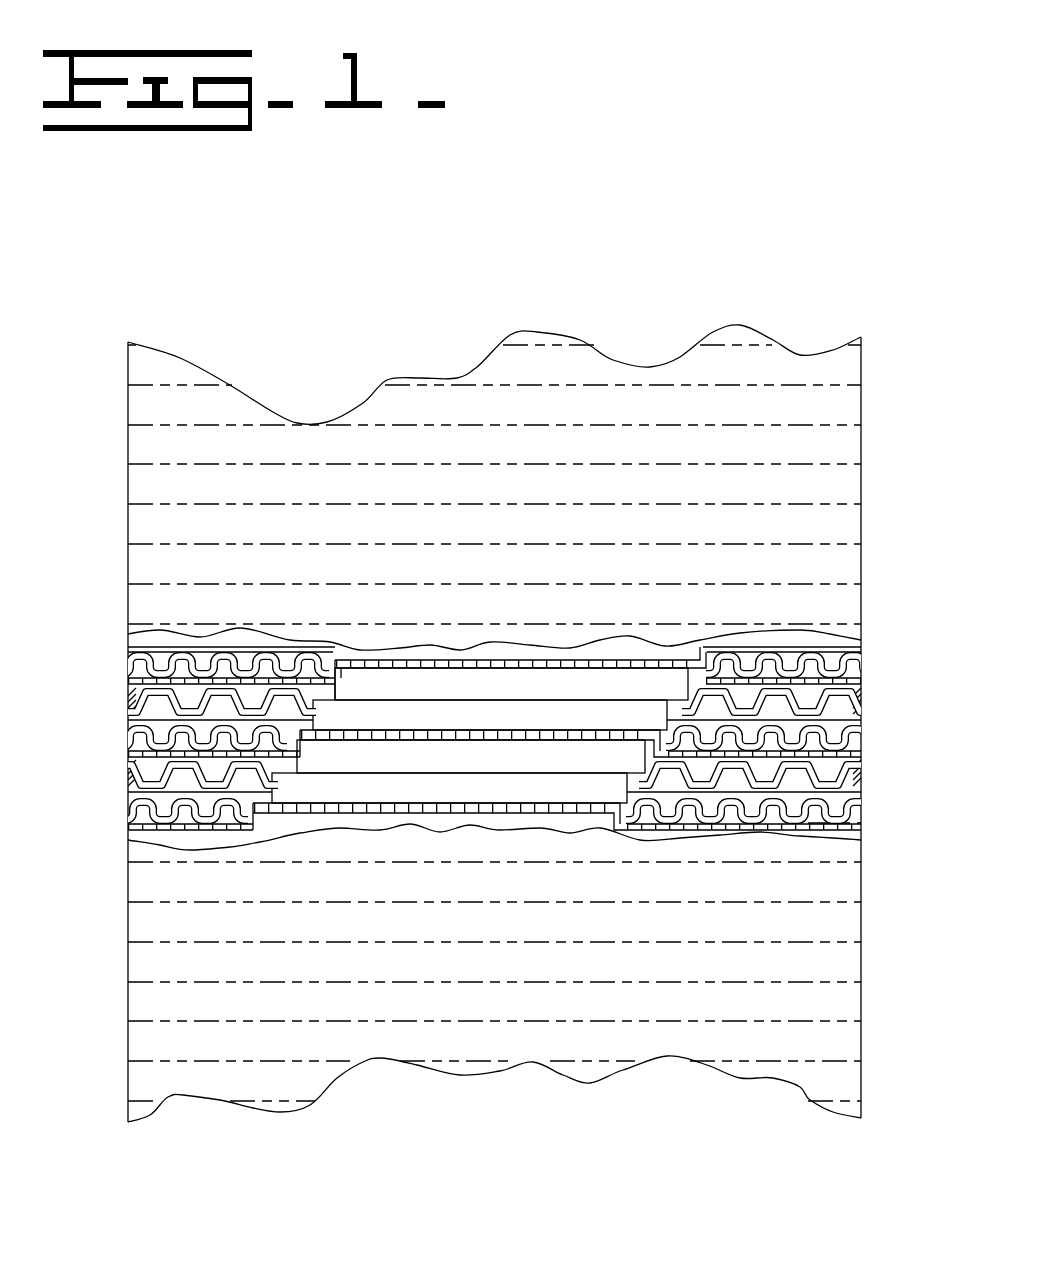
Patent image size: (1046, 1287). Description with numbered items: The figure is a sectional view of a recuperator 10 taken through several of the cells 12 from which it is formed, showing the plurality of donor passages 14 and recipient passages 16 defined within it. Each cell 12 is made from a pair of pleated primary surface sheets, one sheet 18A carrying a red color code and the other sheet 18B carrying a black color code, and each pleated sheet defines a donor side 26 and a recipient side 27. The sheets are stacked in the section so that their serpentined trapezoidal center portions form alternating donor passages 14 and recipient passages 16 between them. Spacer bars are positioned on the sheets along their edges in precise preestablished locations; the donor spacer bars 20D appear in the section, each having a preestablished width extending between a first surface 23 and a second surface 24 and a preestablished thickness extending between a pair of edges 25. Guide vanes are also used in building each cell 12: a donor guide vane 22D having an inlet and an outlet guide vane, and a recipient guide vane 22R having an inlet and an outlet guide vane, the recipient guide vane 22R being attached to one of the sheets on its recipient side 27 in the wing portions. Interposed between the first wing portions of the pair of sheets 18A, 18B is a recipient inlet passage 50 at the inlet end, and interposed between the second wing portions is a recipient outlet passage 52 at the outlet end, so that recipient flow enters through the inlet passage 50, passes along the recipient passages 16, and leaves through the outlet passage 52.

The recuperator 10 is at (656, 316).
The cell 12 is at (128, 786).
The donor passage 14 is at (600, 683).
The recipient passage 16 is at (537, 660).
The primary surface sheet 18A is at (429, 688).
The primary surface sheet 18B is at (445, 660).
The donor spacer bar 20D is at (128, 695).
The donor guide vane 22D is at (862, 708).
The recipient guide vane 22R is at (858, 666).
The first surface 23 is at (128, 750).
The second surface 24 is at (128, 773).
The edge 25 is at (130, 670).
The donor side 26 is at (338, 660).
The recipient side 27 is at (370, 660).
The recipient inlet passage 50 is at (188, 782).
The recipient outlet passage 52 is at (808, 775).